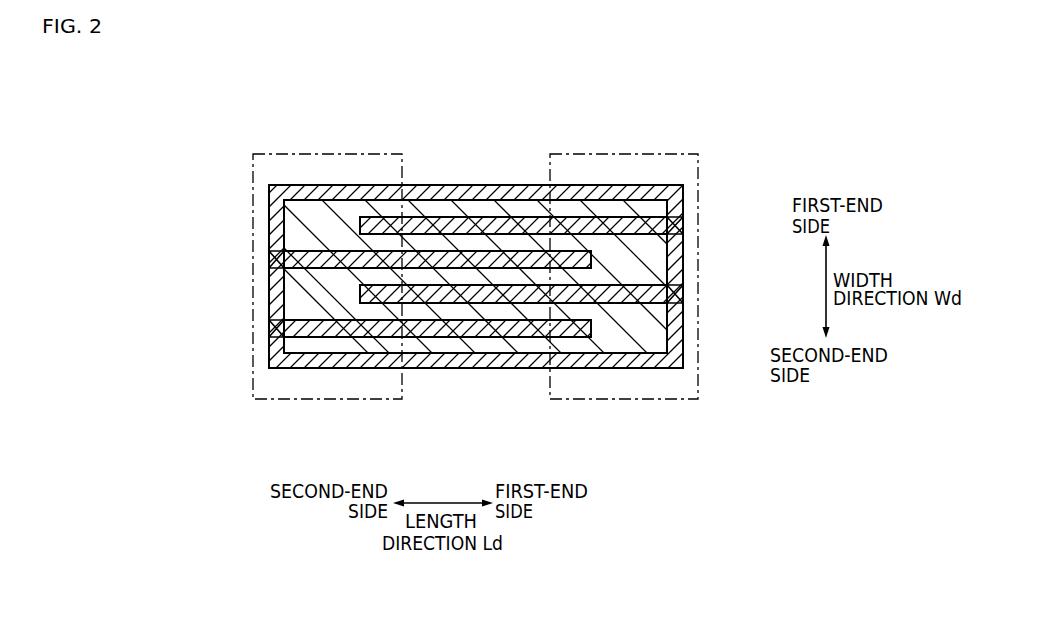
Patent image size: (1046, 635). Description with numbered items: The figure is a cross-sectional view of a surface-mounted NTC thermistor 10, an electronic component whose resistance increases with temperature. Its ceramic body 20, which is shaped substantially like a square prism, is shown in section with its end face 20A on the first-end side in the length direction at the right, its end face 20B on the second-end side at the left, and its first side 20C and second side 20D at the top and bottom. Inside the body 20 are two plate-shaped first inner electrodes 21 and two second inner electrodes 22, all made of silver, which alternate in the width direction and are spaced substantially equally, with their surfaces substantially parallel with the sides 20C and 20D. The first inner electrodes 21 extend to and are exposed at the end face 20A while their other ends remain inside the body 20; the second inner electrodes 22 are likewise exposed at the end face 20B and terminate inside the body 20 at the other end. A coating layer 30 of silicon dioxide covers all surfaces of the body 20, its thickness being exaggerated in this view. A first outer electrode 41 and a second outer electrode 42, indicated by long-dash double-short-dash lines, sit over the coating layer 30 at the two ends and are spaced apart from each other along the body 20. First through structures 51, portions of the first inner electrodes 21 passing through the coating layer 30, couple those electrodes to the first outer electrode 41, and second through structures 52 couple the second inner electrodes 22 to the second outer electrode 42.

The NTC thermistor 10 is at (265, 92).
The body 20 is at (336, 138).
The end face 20A is at (683, 343).
The end face 20B is at (273, 203).
The first side 20C is at (447, 185).
The second side 20D is at (432, 368).
The first inner electrode 21 is at (636, 215).
The second inner electrode 22 is at (328, 295).
The coating layer 30 is at (515, 185).
The first outer electrode 41 is at (700, 178).
The second outer electrode 42 is at (253, 167).
The first through structure 51 is at (683, 226).
The second through structure 52 is at (270, 259).